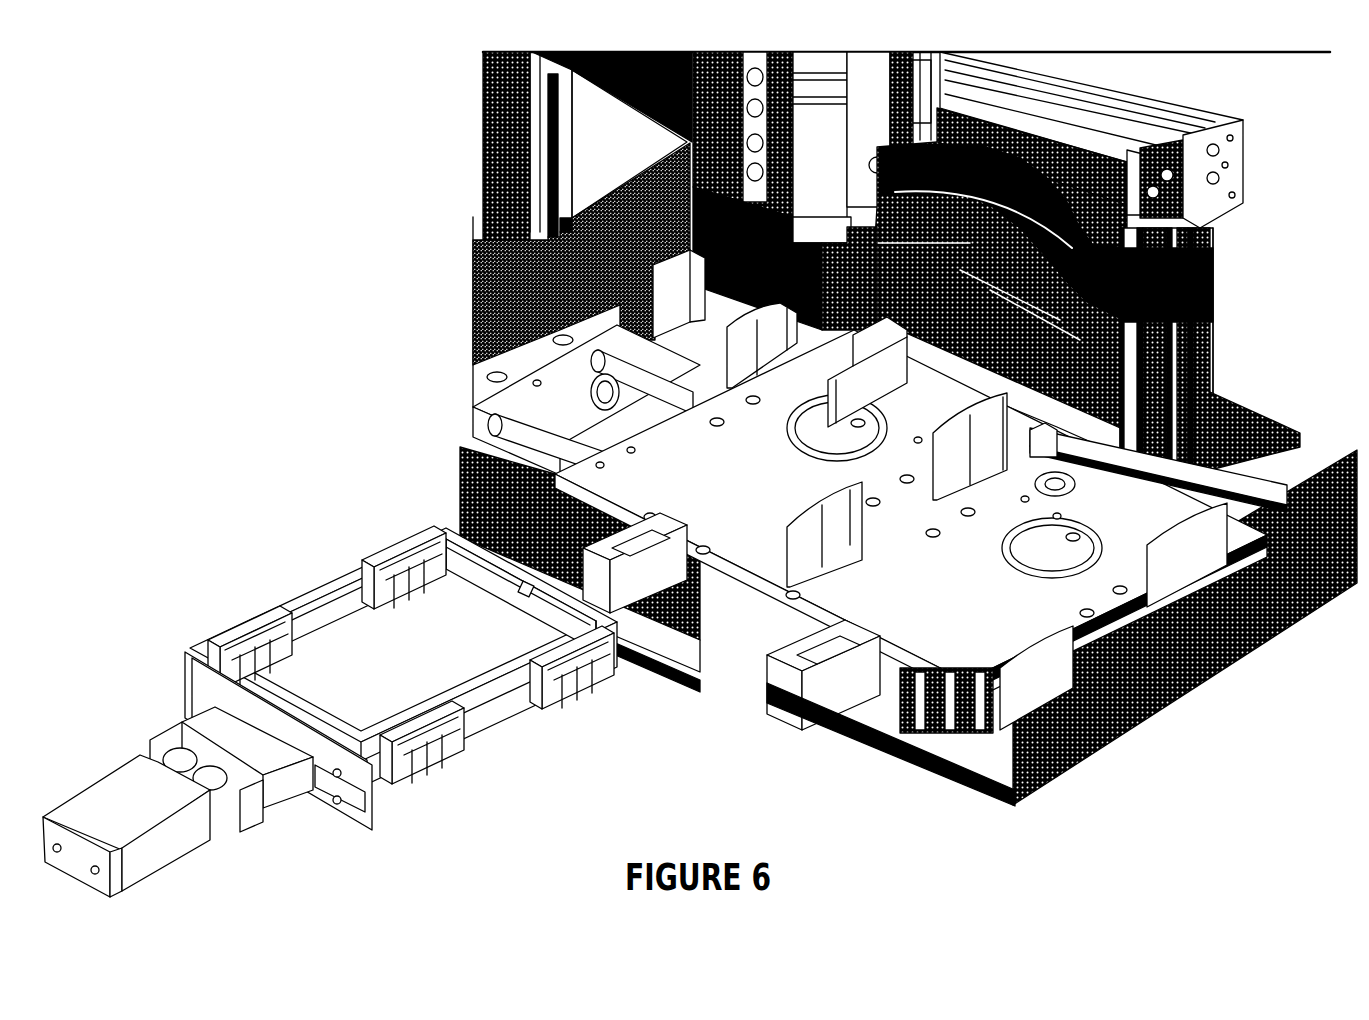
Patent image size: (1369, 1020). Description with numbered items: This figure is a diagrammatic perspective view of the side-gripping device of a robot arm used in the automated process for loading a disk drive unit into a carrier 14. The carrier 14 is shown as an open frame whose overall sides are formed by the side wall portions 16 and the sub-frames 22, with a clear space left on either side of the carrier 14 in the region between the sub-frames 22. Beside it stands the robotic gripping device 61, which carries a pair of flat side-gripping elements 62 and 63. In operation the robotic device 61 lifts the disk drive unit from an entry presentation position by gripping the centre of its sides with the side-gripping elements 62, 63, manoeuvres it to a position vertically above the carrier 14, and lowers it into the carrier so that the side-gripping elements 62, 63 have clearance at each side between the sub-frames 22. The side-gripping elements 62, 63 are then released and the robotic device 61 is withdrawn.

The carrier 14 is at (366, 835).
The side wall portions 16 is at (332, 638).
The sub-frames 22 is at (228, 626).
The robotic gripping device 61 is at (690, 213).
The flat side-gripping element 62 is at (690, 303).
The flat side-gripping element 63 is at (830, 398).